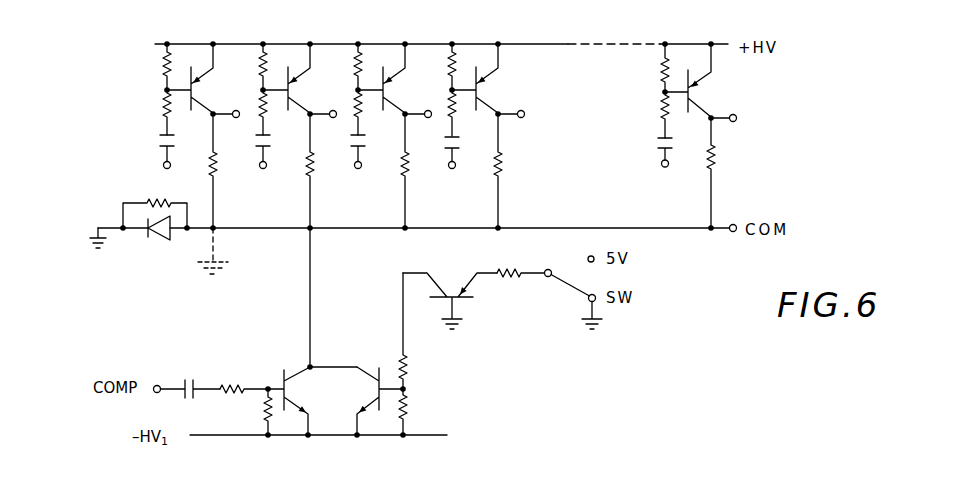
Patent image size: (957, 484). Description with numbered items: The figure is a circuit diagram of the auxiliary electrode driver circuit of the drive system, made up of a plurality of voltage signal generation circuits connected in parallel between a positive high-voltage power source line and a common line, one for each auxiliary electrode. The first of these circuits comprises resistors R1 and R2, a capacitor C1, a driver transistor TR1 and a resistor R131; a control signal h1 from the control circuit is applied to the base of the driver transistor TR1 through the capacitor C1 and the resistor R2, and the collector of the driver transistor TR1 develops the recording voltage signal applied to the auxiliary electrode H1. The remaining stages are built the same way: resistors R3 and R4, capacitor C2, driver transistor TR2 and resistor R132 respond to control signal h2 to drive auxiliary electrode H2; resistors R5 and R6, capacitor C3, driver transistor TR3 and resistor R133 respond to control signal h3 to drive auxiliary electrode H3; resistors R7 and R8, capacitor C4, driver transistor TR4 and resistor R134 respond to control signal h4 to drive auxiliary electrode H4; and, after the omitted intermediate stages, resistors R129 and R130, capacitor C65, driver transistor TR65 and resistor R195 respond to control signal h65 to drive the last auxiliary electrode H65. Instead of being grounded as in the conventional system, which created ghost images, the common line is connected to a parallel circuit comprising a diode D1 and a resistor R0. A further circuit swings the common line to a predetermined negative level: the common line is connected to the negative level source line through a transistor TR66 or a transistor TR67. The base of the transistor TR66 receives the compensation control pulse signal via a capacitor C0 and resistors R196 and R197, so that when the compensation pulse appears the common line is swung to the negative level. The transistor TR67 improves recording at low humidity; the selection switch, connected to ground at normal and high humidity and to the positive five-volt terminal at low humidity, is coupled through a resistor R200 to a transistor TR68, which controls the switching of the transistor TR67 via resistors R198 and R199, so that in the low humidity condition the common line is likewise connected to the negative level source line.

The resistor R1 is at (149, 67).
The resistor R2 is at (149, 112).
The capacitor C1 is at (151, 148).
The control signal h1 is at (155, 169).
The driver transistor TR1 is at (202, 78).
The auxiliary electrode H1 is at (225, 115).
The resistor R131 is at (197, 171).
The resistor R3 is at (251, 67).
The resistor R4 is at (253, 112).
The capacitor C2 is at (254, 148).
The control signal h2 is at (256, 177).
The driver transistor TR2 is at (297, 78).
The auxiliary electrode H2 is at (323, 115).
The resistor R132 is at (292, 171).
The resistor R5 is at (346, 67).
The resistor R6 is at (347, 112).
The capacitor C3 is at (347, 149).
The control signal h3 is at (351, 179).
The driver transistor TR3 is at (393, 78).
The auxiliary electrode H3 is at (418, 115).
The resistor R133 is at (386, 171).
The resistor R7 is at (444, 67).
The resistor R8 is at (443, 113).
The capacitor C4 is at (439, 150).
The control signal h4 is at (445, 179).
The driver transistor TR4 is at (486, 78).
The auxiliary electrode H4 is at (522, 123).
The resistor R134 is at (515, 171).
The resistor R129 is at (643, 68).
The resistor R130 is at (643, 115).
The capacitor C65 is at (645, 150).
The control signal h65 is at (655, 175).
The driver transistor TR65 is at (701, 80).
The auxiliary electrode H65 is at (737, 127).
The resistor R195 is at (729, 173).
The resistor R0 is at (149, 202).
The diode D1 is at (160, 241).
The capacitor C0 is at (191, 376).
The resistor R196 is at (242, 377).
The resistor R197 is at (244, 412).
The transistor TR66 is at (300, 401).
The transistor TR67 is at (366, 401).
The resistor R199 is at (423, 331).
The resistor R198 is at (423, 412).
The transistor TR68 is at (450, 291).
The resistor R200 is at (518, 265).